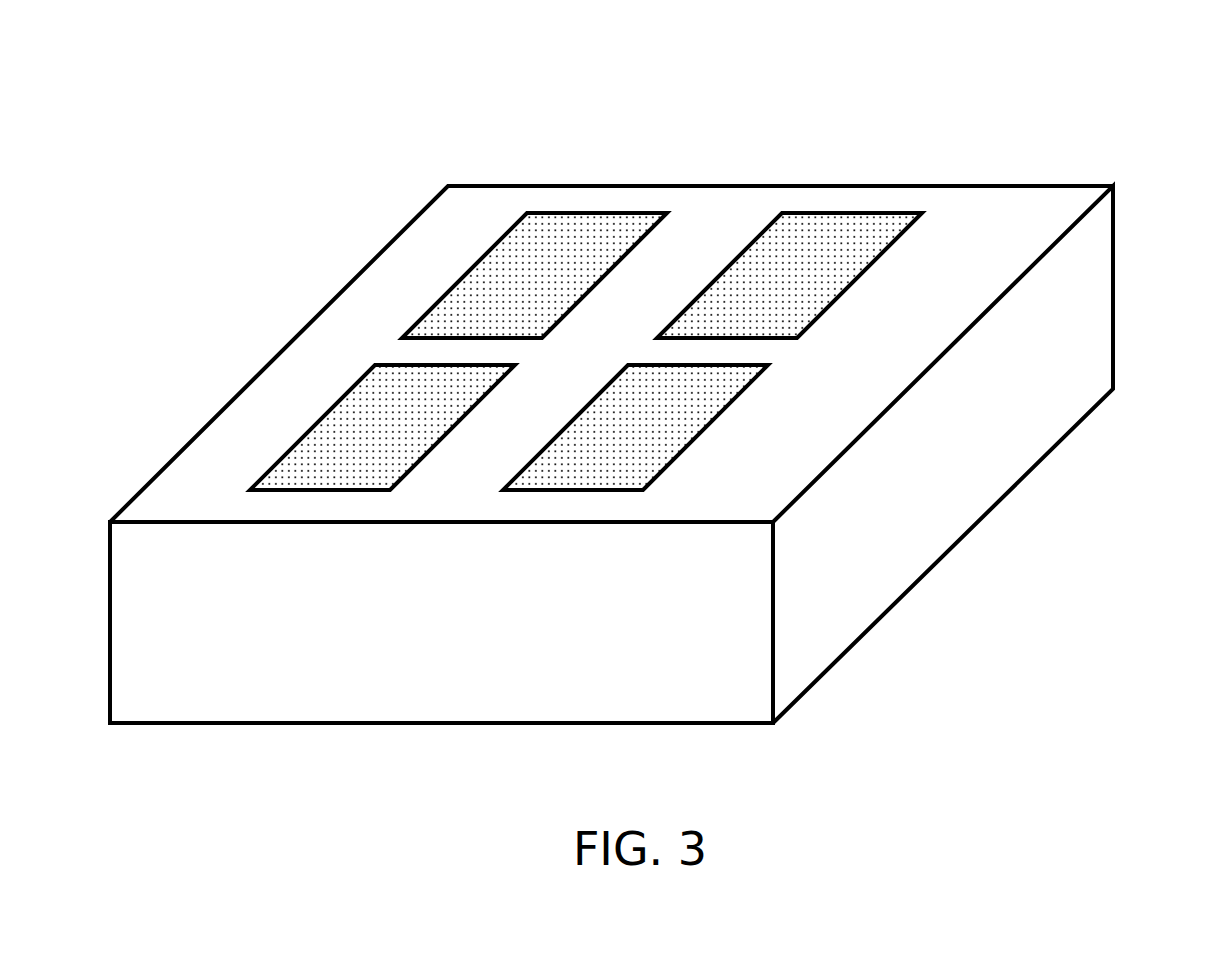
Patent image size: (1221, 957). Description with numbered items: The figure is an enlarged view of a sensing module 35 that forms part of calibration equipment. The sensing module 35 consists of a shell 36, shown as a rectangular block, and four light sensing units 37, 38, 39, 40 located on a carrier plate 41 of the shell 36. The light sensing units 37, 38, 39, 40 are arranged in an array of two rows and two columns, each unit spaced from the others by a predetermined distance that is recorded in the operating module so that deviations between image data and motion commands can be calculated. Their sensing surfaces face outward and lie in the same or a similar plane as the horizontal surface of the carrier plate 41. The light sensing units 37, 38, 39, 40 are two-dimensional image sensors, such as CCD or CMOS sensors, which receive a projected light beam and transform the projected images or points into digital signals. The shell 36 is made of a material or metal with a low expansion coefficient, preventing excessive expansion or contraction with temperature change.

The sensing module 35 is at (337, 89).
The shell 36 is at (1113, 286).
The light sensing unit 37 is at (670, 405).
The light sensing unit 38 is at (820, 280).
The light sensing unit 39 is at (348, 437).
The light sensing unit 40 is at (502, 287).
The carrier plate 41 is at (578, 363).